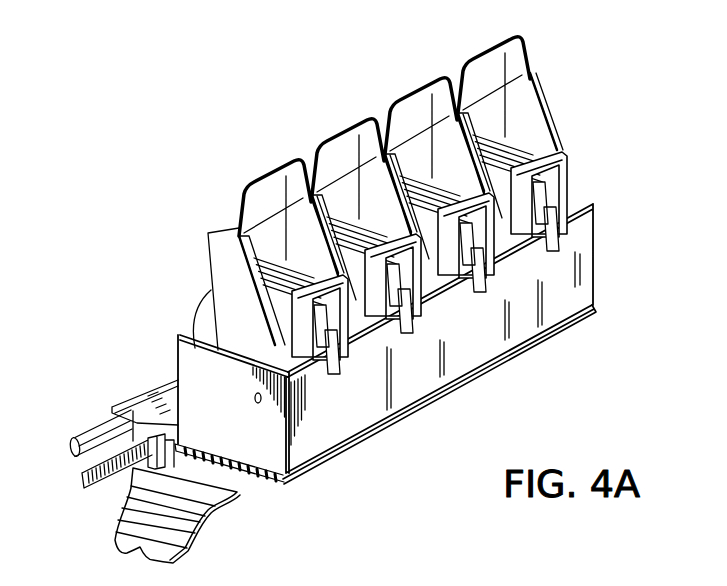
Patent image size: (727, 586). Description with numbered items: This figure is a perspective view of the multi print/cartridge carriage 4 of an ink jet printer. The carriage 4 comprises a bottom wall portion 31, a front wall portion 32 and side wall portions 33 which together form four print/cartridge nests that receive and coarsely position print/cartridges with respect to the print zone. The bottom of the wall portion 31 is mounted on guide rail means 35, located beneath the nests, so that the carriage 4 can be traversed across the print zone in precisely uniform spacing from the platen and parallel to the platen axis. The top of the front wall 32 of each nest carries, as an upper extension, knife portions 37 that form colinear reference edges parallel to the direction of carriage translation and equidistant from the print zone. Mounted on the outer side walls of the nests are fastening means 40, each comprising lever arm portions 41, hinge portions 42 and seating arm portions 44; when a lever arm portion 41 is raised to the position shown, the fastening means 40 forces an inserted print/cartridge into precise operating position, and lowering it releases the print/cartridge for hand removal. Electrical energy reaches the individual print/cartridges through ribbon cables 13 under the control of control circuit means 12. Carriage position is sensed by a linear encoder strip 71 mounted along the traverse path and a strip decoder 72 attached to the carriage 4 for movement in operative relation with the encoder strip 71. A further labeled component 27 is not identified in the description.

The print/cartridge carriage 4 is at (471, 347).
The control circuit means 12 is at (400, 418).
The ribbon cables 13 is at (245, 494).
The mounting bracket 27 is at (552, 182).
The bottom wall portion 31 is at (153, 393).
The front wall portion 32 is at (557, 307).
The side wall portions 33 is at (223, 405).
The guide rail means 35 is at (100, 440).
The knife portions 37 is at (337, 360).
The fastening means 40 is at (282, 177).
The lever arm portions 41 is at (280, 166).
The hinge portions 42 is at (258, 400).
The seating arm portions 44 is at (285, 386).
The linear encoder strip 71 is at (82, 497).
The strip decoder 72 is at (203, 503).